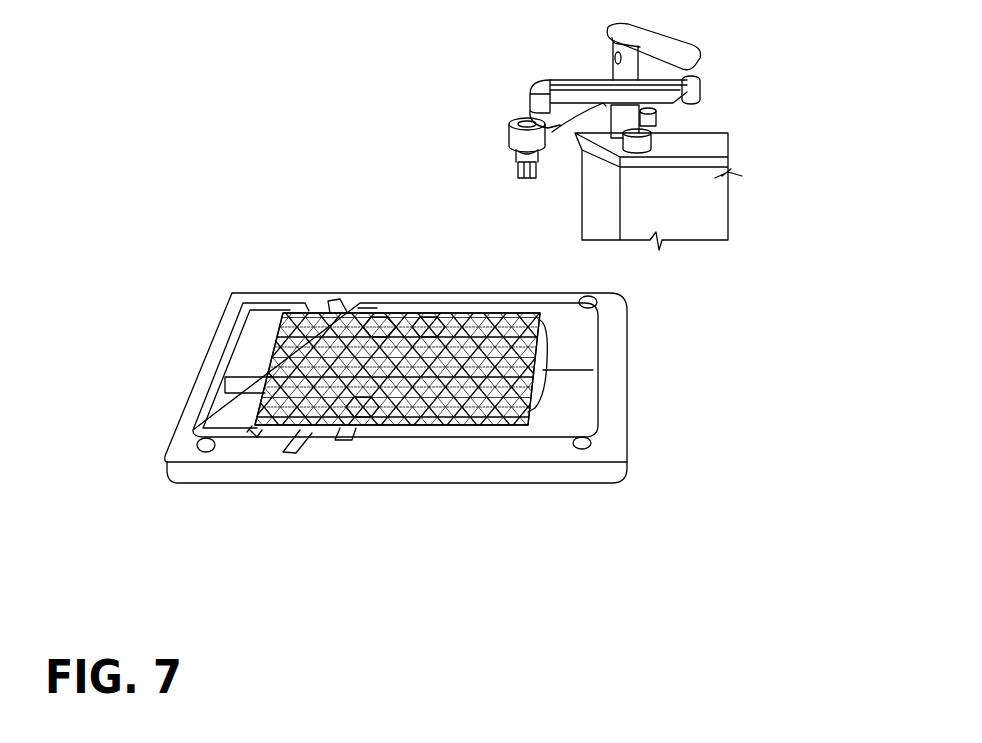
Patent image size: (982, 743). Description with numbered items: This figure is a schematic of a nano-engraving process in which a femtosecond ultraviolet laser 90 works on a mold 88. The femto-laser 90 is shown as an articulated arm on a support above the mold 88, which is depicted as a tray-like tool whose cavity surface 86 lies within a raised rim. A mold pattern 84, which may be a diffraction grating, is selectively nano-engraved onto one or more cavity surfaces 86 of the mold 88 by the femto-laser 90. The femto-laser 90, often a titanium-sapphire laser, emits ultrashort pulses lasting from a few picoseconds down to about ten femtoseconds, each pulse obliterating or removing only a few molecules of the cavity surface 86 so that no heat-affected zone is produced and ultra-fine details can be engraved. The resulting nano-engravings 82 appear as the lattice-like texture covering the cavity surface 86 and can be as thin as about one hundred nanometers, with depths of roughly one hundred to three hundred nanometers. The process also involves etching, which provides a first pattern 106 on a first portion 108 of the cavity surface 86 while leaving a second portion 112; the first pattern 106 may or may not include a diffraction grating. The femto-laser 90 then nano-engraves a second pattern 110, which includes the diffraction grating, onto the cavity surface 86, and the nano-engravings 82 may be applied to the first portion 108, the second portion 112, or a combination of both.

The femtosecond ultraviolet laser 90 is at (665, 100).
The mold 88 is at (612, 392).
The cavity surface 86 is at (543, 350).
The nano-engravings 82 is at (537, 388).
The mold pattern 84 is at (257, 433).
The first pattern 106 is at (343, 422).
The second pattern 110 is at (360, 417).
The first portion 108 is at (380, 317).
The second portion 112 is at (423, 317).